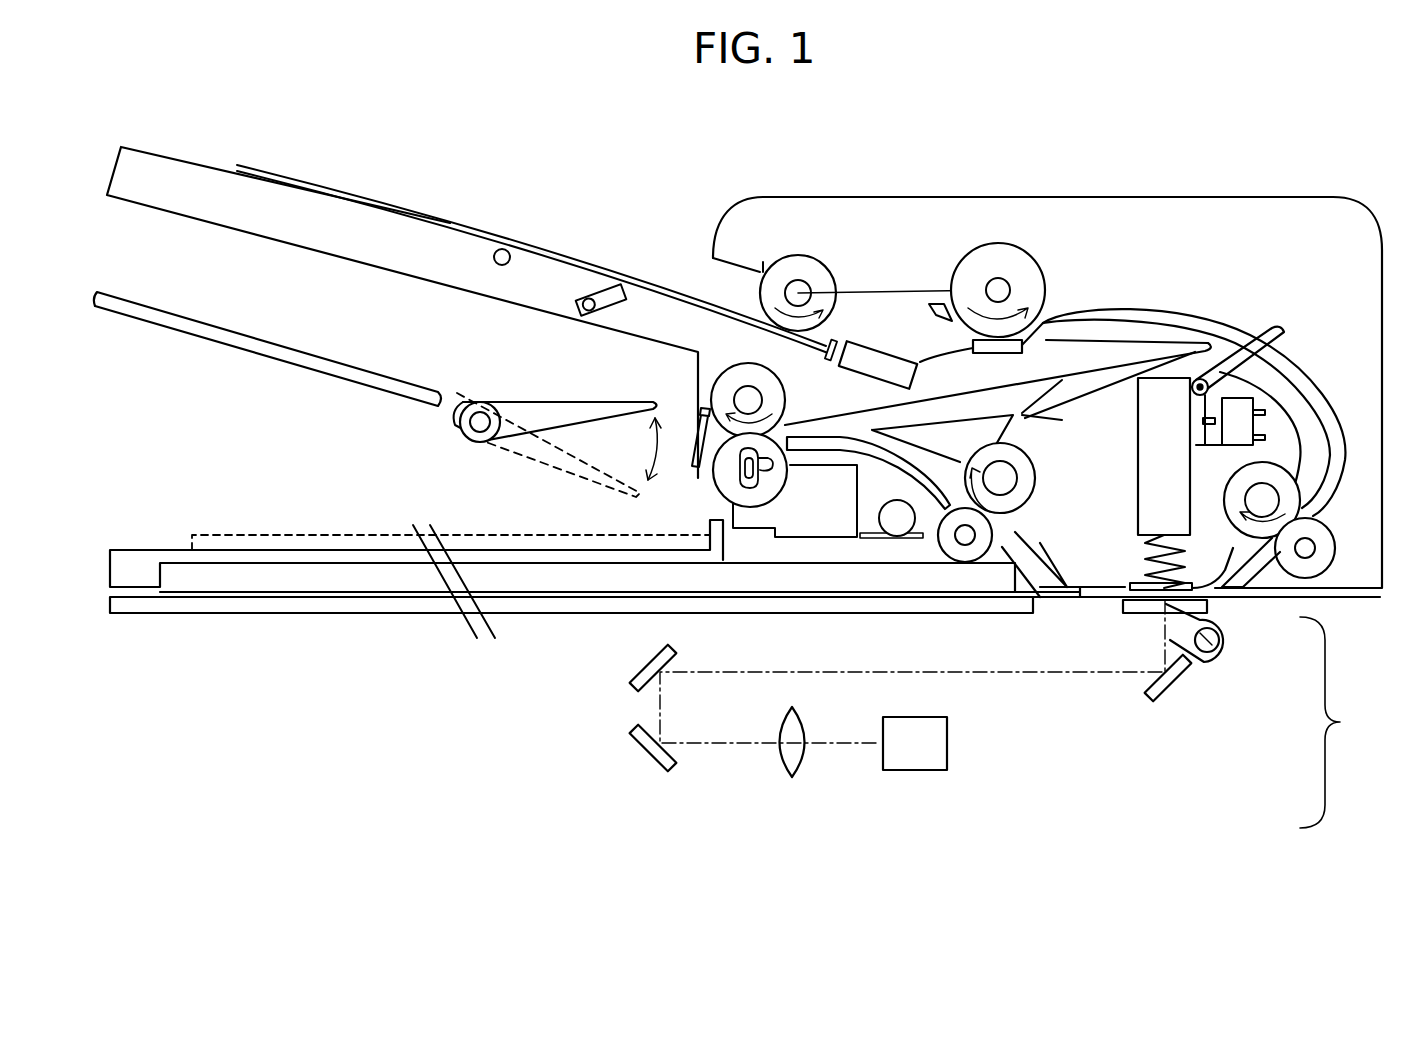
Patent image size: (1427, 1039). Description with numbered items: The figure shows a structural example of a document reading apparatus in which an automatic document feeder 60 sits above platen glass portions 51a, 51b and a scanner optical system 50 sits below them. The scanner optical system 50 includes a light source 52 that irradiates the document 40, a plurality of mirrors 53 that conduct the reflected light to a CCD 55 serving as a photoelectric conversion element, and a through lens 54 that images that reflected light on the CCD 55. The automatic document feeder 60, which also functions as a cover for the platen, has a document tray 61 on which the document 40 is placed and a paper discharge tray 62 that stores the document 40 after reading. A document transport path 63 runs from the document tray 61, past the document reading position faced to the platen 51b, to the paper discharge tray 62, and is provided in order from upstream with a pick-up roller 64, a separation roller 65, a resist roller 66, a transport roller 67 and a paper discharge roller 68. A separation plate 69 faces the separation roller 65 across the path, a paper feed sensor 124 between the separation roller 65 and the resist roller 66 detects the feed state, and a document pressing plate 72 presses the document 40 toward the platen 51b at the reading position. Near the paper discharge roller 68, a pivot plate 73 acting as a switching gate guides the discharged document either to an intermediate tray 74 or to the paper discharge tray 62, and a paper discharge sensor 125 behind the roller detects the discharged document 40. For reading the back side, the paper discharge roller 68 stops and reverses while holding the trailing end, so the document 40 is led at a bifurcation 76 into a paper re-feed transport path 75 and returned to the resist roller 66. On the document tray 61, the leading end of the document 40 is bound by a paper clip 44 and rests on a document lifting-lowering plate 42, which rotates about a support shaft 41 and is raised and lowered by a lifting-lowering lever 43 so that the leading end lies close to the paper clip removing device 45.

The document 40 is at (396, 205).
The support shaft 41 is at (505, 248).
The document lifting-lowering plate 42 is at (557, 263).
The document lifting-lowering mechanism 43 is at (618, 292).
The paper clip 44 is at (836, 342).
The paper clip removing device 45 is at (856, 372).
The scanner optical system 50 is at (1342, 722).
The document platen 51a is at (363, 615).
The document platen 51b is at (1135, 613).
The light source 52 is at (1232, 638).
The mirrors 53 is at (640, 662).
The through lens 54 is at (792, 780).
The CCD 55 is at (916, 772).
The automatic document feeder 60 is at (1312, 160).
The document tray 61 is at (176, 150).
The paper discharge tray 62 is at (154, 548).
The document transport path 63 is at (1340, 425).
The pick-up roller 64 is at (760, 290).
The separation roller 65 is at (1036, 258).
The resist roller 66 is at (1335, 550).
The transport roller 67 is at (1036, 472).
The paper discharge roller 68 is at (712, 386).
The separation plate 69 is at (995, 356).
The document pressing plate 72 is at (1060, 518).
The pivot plate for an intermediate tray 73 is at (538, 400).
The intermediate tray 74 is at (276, 362).
The paper re-feed transport path 75 is at (1132, 368).
The bifurcation 76 is at (1012, 426).
The paper feed sensor 124 is at (1268, 334).
The paper discharge sensor 125 is at (697, 468).